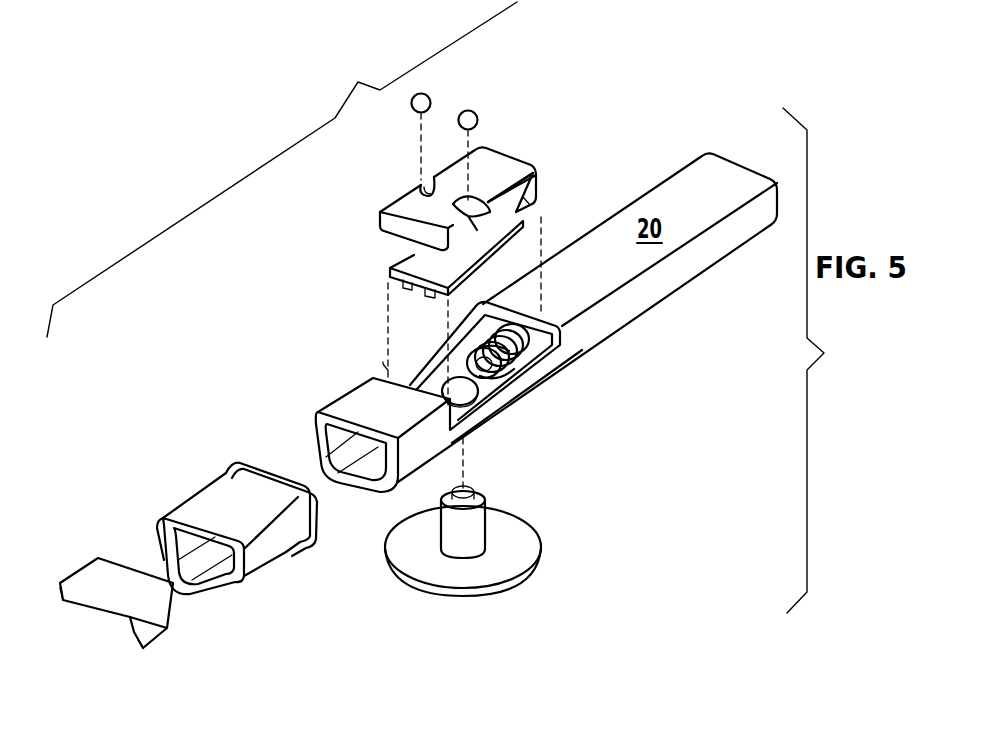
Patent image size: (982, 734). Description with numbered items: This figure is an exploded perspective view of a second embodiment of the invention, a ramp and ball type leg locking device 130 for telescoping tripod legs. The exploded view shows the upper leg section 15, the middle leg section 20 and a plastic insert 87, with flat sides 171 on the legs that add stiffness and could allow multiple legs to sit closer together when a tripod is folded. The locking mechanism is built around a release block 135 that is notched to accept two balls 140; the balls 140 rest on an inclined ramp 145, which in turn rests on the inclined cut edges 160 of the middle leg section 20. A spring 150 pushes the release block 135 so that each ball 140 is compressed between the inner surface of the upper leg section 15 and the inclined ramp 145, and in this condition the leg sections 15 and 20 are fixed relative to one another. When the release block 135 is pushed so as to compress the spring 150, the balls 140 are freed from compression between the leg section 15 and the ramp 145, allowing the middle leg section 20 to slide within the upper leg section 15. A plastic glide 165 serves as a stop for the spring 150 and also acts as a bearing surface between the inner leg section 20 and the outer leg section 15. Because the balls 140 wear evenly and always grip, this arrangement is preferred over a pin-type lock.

The ramp and ball type leg locking device 130 is at (648, 63).
The middle leg section 20 is at (546, 322).
The balls 140 is at (429, 95).
The release block 135 is at (533, 160).
The ramp 145 is at (413, 262).
The inclined cut edges 160 is at (418, 372).
The spring 150 is at (530, 345).
The plastic glide 165 is at (543, 558).
The plastic insert 87 is at (249, 519).
The flat sides 171 is at (158, 558).
The upper leg section 15 is at (70, 578).